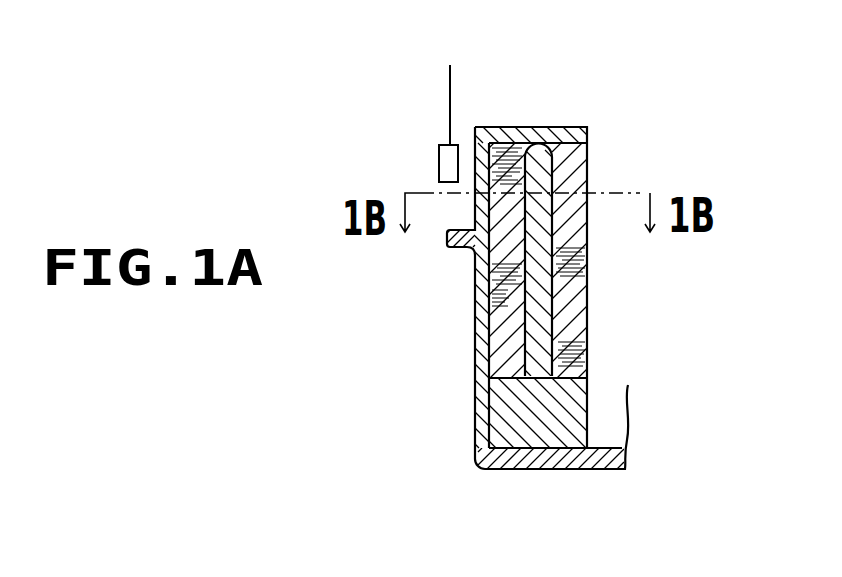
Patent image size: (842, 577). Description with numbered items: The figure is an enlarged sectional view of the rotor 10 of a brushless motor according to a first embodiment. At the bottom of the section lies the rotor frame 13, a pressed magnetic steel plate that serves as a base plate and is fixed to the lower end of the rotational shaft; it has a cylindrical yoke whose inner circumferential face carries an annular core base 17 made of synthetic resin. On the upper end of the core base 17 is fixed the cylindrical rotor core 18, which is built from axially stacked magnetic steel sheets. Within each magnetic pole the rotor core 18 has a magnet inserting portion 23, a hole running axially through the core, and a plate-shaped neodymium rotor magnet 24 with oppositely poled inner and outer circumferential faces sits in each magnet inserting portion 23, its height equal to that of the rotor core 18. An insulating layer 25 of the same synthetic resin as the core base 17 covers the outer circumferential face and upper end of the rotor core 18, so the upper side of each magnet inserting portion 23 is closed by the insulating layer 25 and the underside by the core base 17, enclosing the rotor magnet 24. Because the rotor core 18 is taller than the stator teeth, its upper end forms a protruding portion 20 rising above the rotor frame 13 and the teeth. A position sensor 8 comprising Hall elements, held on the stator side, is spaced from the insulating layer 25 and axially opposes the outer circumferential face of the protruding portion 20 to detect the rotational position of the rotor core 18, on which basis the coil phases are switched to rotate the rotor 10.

The position sensor 8 is at (440, 157).
The rotor 10 is at (490, 128).
The rotor frame 13 is at (533, 468).
The core base 17 is at (490, 406).
The rotor core 18 is at (588, 310).
The protruding portion 20 is at (587, 159).
The magnet inserting portion 23 is at (523, 342).
The rotor magnet 24 is at (523, 287).
The insulating layer 25 is at (549, 143).